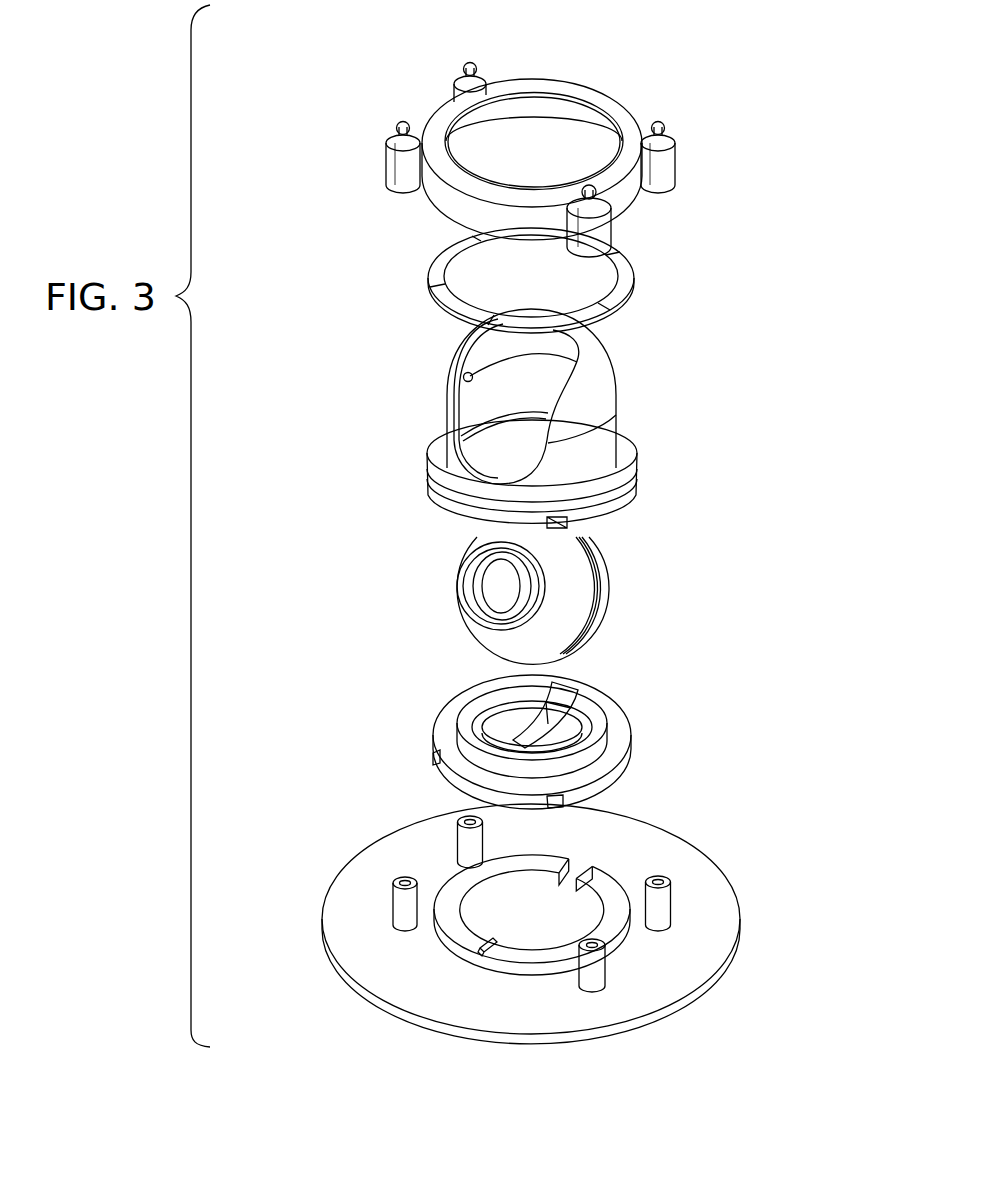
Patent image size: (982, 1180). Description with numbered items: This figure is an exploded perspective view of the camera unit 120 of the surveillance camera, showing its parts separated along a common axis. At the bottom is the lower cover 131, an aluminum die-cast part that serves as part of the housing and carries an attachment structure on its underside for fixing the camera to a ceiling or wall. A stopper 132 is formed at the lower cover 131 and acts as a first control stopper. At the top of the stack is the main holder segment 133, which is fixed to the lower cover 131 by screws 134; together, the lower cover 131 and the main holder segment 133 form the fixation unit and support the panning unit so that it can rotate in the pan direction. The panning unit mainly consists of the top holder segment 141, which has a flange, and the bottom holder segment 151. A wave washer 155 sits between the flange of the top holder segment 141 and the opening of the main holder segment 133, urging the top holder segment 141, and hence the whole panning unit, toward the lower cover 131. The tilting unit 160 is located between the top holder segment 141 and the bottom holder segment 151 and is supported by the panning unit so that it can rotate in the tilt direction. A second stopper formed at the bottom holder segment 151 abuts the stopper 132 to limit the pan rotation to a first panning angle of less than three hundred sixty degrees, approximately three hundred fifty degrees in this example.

The camera unit 120 is at (320, 72).
The lower cover 131 is at (700, 940).
The stopper 132 is at (480, 947).
The main holder segment 133 is at (640, 193).
The screws 134 is at (398, 130).
The top holder segment 141 is at (600, 383).
The bottom holder segment 151 is at (612, 760).
The wave washer 155 is at (437, 300).
The tilting unit 160 is at (575, 588).